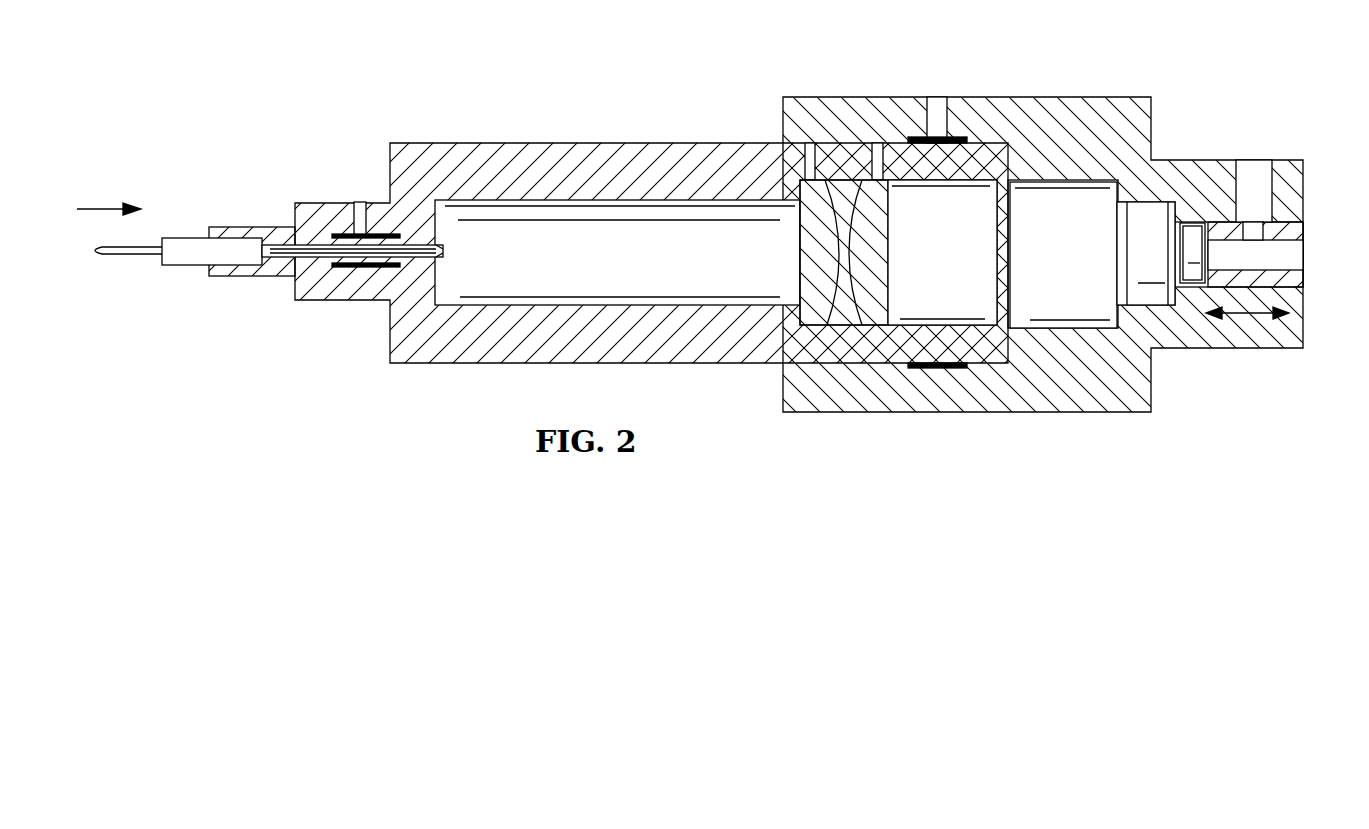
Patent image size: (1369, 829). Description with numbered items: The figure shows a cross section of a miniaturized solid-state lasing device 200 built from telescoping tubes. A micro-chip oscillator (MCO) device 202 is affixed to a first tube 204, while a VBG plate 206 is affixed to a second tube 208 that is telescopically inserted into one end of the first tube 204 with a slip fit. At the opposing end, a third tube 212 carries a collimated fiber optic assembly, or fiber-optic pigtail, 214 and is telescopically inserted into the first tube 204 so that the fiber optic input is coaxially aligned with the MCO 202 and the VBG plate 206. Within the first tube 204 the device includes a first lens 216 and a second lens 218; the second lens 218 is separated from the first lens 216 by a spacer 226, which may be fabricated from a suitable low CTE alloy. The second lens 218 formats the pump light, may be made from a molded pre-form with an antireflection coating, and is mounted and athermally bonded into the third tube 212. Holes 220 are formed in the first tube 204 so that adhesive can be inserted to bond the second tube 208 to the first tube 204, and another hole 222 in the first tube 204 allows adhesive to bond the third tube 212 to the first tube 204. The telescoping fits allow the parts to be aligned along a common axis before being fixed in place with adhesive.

The miniaturized solid-state lasing device 200 is at (637, 62).
The micro-chip oscillator (MCO) device 202 is at (1138, 230).
The first tube 204 is at (1082, 412).
The VBG plate 206 is at (1190, 237).
The second tube 208 is at (1275, 222).
The third tube 212 is at (651, 227).
The collimated fiber optic assembly (fiber-optic pigtail) 214 is at (240, 227).
The first lens 216 is at (800, 265).
The second lens 218 is at (888, 268).
The holes 220 is at (1270, 218).
The hole 222 is at (942, 97).
The spacer 226 is at (857, 213).